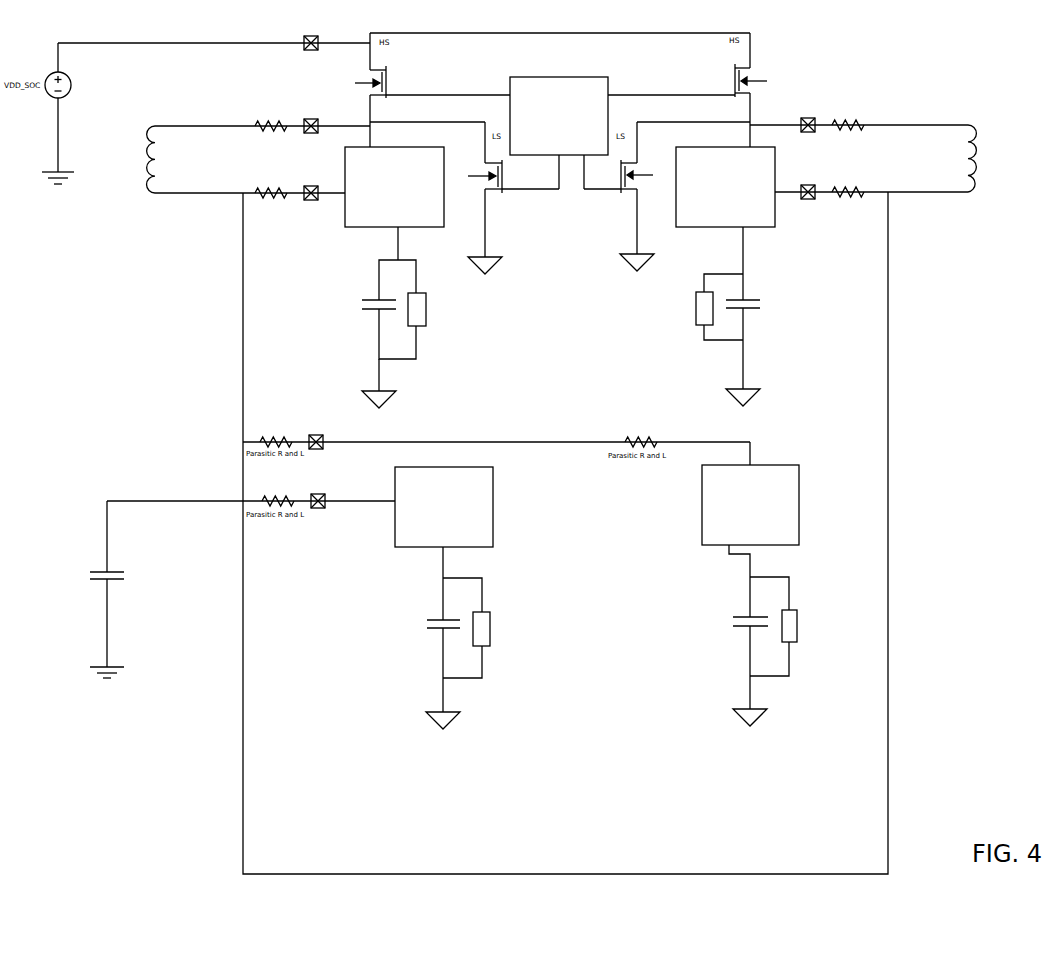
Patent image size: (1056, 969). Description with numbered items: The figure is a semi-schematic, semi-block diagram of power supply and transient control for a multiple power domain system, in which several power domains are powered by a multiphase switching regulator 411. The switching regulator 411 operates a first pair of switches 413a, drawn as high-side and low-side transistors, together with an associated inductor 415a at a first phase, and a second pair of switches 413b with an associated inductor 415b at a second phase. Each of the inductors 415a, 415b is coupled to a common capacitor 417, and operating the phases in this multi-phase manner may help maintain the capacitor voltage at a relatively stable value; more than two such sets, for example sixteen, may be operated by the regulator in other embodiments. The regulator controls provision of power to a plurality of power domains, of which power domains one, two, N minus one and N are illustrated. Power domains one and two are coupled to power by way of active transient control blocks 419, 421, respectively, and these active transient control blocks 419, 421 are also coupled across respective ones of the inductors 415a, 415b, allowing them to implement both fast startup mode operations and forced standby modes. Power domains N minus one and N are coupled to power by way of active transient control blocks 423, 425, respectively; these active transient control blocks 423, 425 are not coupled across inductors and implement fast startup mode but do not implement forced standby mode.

The multiphase switching regulator 411 is at (553, 77).
The first pair of switches 413a is at (390, 86).
The second pair of switches 413b is at (738, 65).
The inductor 415a is at (143, 137).
The inductor 415b is at (970, 137).
The common capacitor 417 is at (130, 579).
The active transient control block 419 is at (365, 228).
The active transient control block 421 is at (763, 227).
The active transient control block 423 is at (493, 498).
The active transient control block 425 is at (799, 498).